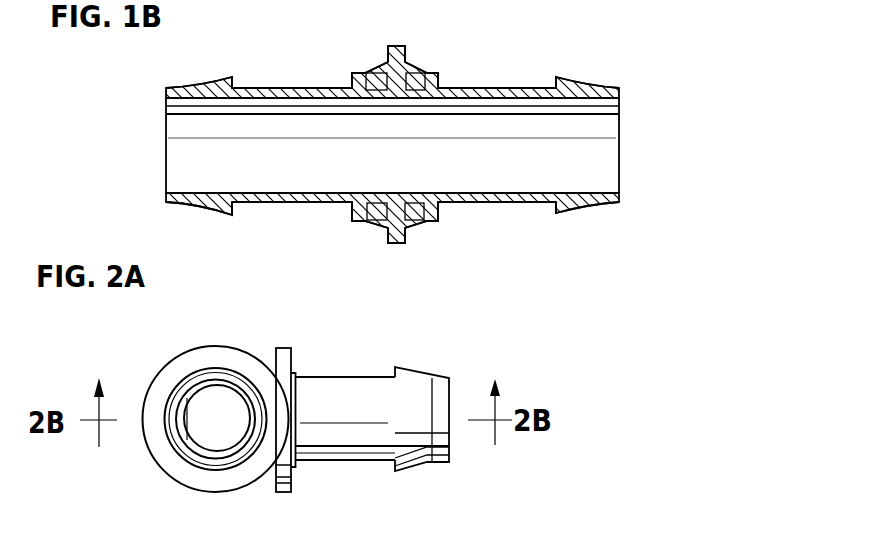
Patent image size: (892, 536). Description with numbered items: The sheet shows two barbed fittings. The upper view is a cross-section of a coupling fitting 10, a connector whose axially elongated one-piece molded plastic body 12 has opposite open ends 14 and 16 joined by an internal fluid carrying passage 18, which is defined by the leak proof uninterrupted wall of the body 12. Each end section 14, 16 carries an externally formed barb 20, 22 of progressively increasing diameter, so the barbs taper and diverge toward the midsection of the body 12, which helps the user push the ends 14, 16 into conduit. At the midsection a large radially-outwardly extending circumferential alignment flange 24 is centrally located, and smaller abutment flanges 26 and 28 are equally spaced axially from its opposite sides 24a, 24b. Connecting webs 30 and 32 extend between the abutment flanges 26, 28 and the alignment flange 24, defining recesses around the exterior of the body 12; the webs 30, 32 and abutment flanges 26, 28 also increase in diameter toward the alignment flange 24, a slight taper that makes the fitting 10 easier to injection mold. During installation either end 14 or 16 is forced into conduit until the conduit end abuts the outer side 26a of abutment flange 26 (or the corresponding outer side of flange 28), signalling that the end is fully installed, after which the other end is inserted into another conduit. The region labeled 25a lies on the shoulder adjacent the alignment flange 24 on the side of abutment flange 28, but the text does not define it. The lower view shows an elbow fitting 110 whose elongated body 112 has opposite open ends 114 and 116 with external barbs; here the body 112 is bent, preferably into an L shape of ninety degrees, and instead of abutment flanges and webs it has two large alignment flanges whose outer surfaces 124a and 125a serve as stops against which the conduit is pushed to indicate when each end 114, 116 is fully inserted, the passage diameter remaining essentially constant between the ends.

In FIG. 1B, the coupling fitting 10 is at (592, 253).
In FIG. 1B, the body 12 is at (541, 92).
In FIG. 1B, the first open end 14 is at (183, 94).
In FIG. 1B, the second open end 16 is at (603, 90).
In FIG. 1B, the internal fluid carrying passage 18 is at (267, 112).
In FIG. 1B, the barb 20 is at (222, 216).
In FIG. 1B, the barb 22 is at (580, 208).
In FIG. 1B, the alignment flange 24 is at (392, 245).
In FIG. 1B, the side of alignment flange 24a is at (387, 64).
In FIG. 1B, the side of alignment flange 24b is at (407, 55).
In FIG. 1B, the right shoulder 25a is at (438, 78).
In FIG. 1B, the abutment flange 26 is at (352, 218).
In FIG. 1B, the outer side of abutment flange 26a is at (352, 78).
In FIG. 1B, the abutment flange 28 is at (440, 221).
In FIG. 1B, the connecting web 30 is at (380, 220).
In FIG. 1B, the connecting web 32 is at (418, 75).
In FIG. 2A, the elbow fitting 110 is at (231, 318).
In FIG. 2A, the elongated body 112 is at (331, 377).
In FIG. 2A, the first open end 114 is at (180, 447).
In FIG. 2A, the second open end 116 is at (443, 378).
In FIG. 2A, the outer surface of alignment flange 124a is at (167, 384).
In FIG. 2A, the outer surface of alignment flange 125a is at (290, 484).